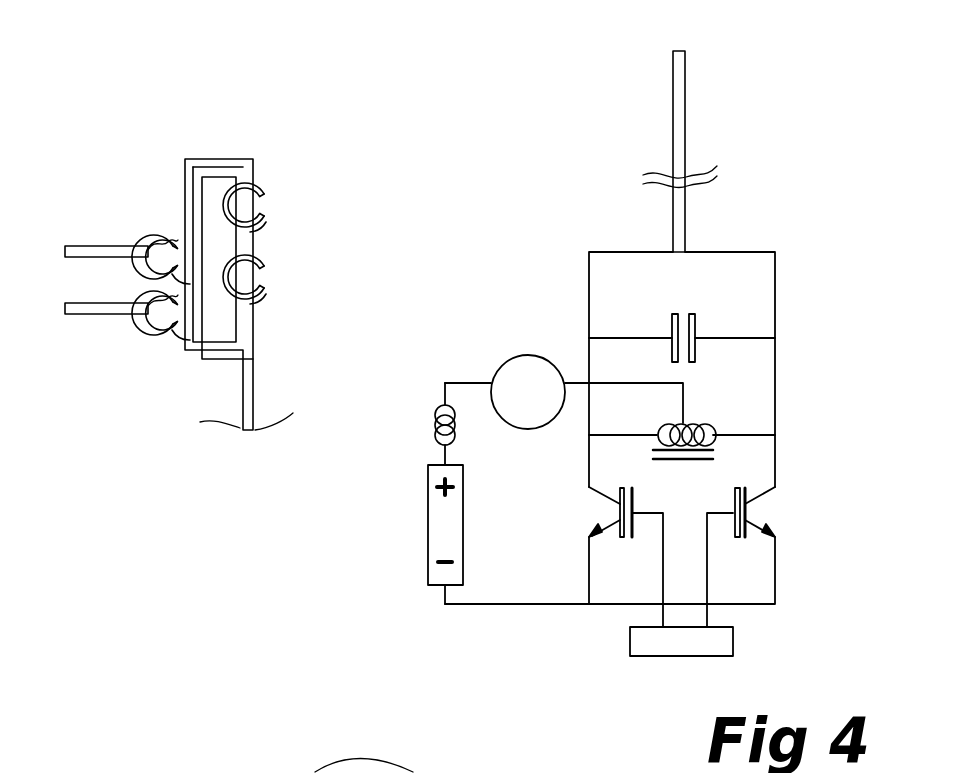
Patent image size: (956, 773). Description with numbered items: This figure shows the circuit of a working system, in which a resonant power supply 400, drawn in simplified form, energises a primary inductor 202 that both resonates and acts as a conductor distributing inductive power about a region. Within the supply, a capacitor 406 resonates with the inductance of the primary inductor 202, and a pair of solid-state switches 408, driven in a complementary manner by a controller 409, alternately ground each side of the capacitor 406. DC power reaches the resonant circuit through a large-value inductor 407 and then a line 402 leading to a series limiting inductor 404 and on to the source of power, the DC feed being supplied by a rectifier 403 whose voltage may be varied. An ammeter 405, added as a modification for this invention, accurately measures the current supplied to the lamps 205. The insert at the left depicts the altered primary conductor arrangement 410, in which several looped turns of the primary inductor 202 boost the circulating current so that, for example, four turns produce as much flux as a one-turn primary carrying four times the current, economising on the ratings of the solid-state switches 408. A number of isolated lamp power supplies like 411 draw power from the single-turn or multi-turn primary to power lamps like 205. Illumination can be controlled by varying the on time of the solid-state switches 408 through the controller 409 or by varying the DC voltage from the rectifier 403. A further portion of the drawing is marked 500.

The resonant power supply 400 is at (400, 107).
The lamp 205 is at (55, 326).
The isolated lamp power supply 411 is at (267, 193).
The altered primary conductor arrangement 410 is at (257, 381).
The primary inductor 202 is at (777, 110).
The line 402 is at (636, 382).
The capacitor 406 is at (697, 350).
The large-value inductor 407 is at (688, 462).
The transistors 408 is at (745, 537).
The controller 409 is at (810, 647).
The ammeter 405 is at (557, 427).
The series limiting inductor 404 is at (436, 428).
The rectifier 403 is at (428, 560).
The device 500 is at (460, 772).